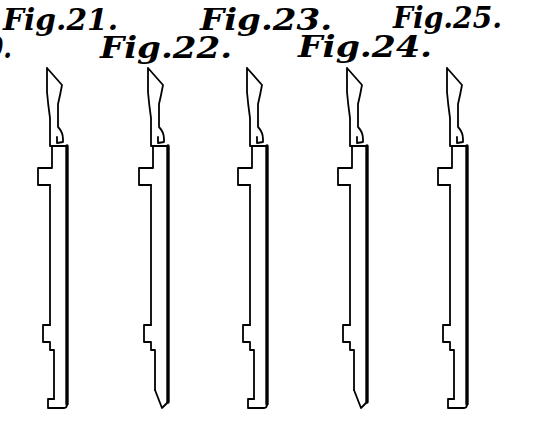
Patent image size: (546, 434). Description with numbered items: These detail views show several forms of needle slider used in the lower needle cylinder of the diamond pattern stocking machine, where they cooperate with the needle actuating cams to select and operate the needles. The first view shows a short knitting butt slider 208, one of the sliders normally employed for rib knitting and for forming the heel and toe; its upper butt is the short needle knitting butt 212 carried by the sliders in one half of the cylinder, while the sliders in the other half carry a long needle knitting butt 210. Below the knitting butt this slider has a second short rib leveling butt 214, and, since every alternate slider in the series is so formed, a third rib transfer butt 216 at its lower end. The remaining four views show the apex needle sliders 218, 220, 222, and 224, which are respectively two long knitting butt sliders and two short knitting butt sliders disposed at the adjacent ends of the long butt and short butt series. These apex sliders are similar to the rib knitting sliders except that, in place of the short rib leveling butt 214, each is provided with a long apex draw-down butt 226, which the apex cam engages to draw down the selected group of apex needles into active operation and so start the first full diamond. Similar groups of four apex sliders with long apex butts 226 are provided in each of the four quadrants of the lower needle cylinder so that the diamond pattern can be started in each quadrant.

In FIG. 21, the short knitting butt slider 208 is at (53, 238).
In FIG. 22, the long needle knitting butt 210 is at (130, 165).
In FIG. 23, the long needle knitting butt 210 is at (229, 165).
In FIG. 21, the short needle knitting butt 212 is at (47, 174).
In FIG. 24, the short needle knitting butt 212 is at (329, 165).
In FIG. 25, the short needle knitting butt 212 is at (429, 165).
In FIG. 21, the short rib leveling butt 214 is at (45, 333).
In FIG. 21, the rib transfer butt 216 is at (50, 405).
In FIG. 23, the rib transfer butt 216 is at (236, 408).
In FIG. 25, the rib transfer butt 216 is at (433, 408).
In FIG. 22, the apex needle slider 218 is at (138, 274).
In FIG. 23, the apex needle slider 220 is at (237, 275).
In FIG. 24, the apex needle slider 222 is at (337, 274).
In FIG. 25, the apex needle slider 224 is at (437, 275).
In FIG. 22, the long apex draw-down butt 226 is at (132, 350).
In FIG. 23, the long apex draw-down butt 226 is at (231, 354).
In FIG. 24, the long apex draw-down butt 226 is at (331, 350).
In FIG. 25, the long apex draw-down butt 226 is at (431, 354).